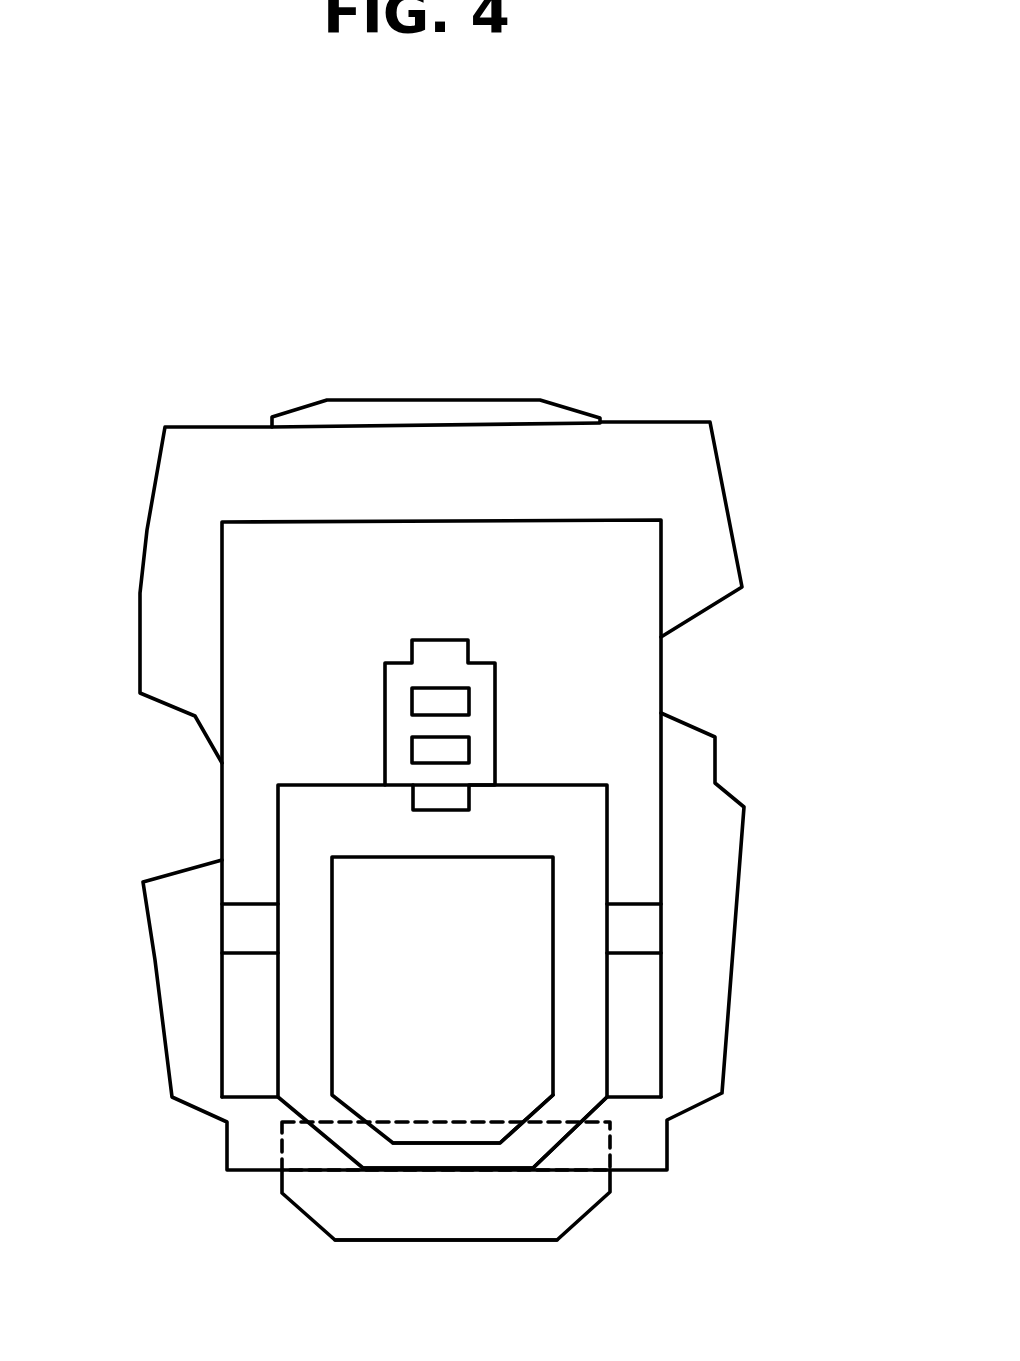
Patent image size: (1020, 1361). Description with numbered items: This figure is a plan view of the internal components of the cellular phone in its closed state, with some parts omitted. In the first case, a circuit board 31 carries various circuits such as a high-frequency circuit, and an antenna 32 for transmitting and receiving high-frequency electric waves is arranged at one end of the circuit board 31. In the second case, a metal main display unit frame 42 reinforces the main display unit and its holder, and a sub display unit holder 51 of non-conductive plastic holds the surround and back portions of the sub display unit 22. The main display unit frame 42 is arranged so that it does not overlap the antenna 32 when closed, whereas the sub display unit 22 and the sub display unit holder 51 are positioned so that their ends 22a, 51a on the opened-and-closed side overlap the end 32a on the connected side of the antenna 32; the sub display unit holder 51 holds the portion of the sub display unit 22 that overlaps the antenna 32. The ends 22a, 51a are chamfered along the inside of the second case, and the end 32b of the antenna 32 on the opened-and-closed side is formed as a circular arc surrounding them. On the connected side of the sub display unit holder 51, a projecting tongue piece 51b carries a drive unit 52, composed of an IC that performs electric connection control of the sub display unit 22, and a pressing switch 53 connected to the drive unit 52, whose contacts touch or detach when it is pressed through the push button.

The circuit board 31 is at (717, 525).
The main display unit frame 42 is at (630, 682).
The sub display unit holder 51 is at (578, 870).
The sub display unit 22 is at (517, 1005).
The pressing switch 53 is at (428, 699).
The tongue piece 51b is at (403, 733).
The drive unit 52 is at (433, 752).
The antenna 32 is at (363, 1230).
The end on the connected side of the antenna 32a is at (298, 1157).
The end of the opened-and-closed side of the antenna 32b is at (463, 1243).
The end on the opened-and-closed side of the sub display unit 22a is at (500, 1127).
The end on the opened-and-closed side of the sub display unit holder 51a is at (507, 1152).